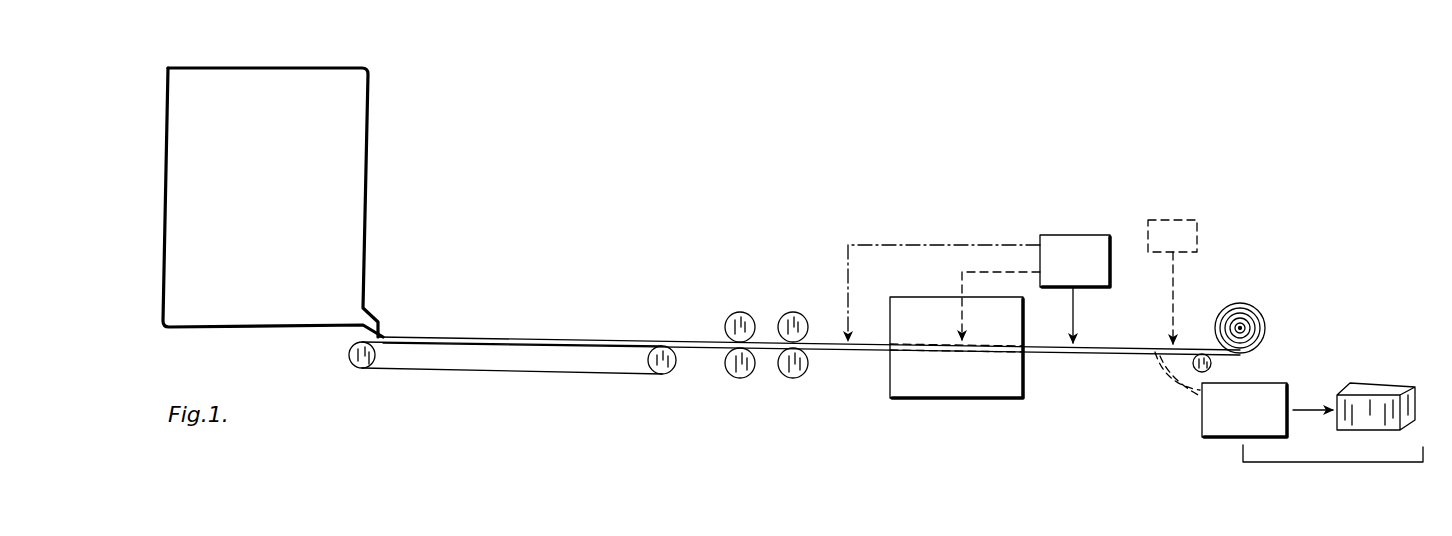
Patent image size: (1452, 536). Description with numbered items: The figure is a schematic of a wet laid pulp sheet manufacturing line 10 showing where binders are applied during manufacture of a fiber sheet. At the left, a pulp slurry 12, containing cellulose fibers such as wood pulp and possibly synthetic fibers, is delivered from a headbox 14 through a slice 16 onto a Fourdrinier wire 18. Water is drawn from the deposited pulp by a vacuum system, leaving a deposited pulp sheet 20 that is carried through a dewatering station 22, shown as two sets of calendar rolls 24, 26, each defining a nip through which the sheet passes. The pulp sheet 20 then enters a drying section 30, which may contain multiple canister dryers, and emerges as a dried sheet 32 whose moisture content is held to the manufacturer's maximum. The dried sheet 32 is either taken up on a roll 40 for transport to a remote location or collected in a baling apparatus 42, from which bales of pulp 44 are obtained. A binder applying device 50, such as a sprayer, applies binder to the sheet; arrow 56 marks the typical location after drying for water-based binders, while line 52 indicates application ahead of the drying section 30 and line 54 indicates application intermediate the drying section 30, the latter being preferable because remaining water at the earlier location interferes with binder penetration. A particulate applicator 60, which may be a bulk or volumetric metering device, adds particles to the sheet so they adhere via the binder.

The pulp sheet manufacturing line 10 is at (802, 160).
The pulp slurry 12 is at (346, 202).
The headbox 14 is at (380, 117).
The slice 16 is at (370, 310).
The Fourdrinier wire 18 is at (418, 348).
The pulp sheet 20 is at (478, 337).
The dewatering station 22 is at (766, 299).
The calendar rolls 24 is at (732, 377).
The calendar rolls 26 is at (800, 378).
The drying section 30 is at (950, 404).
The dried sheet 32 is at (1048, 356).
The roll 40 is at (1250, 302).
The baling apparatus 42 is at (1272, 383).
The bales of pulp 44 is at (1375, 388).
The binder applying device 50 is at (1094, 226).
The binder application line 52 is at (900, 245).
The binder application line 54 is at (1012, 272).
The binder application arrow 56 is at (1090, 309).
The particulate applicator 60 is at (1188, 220).